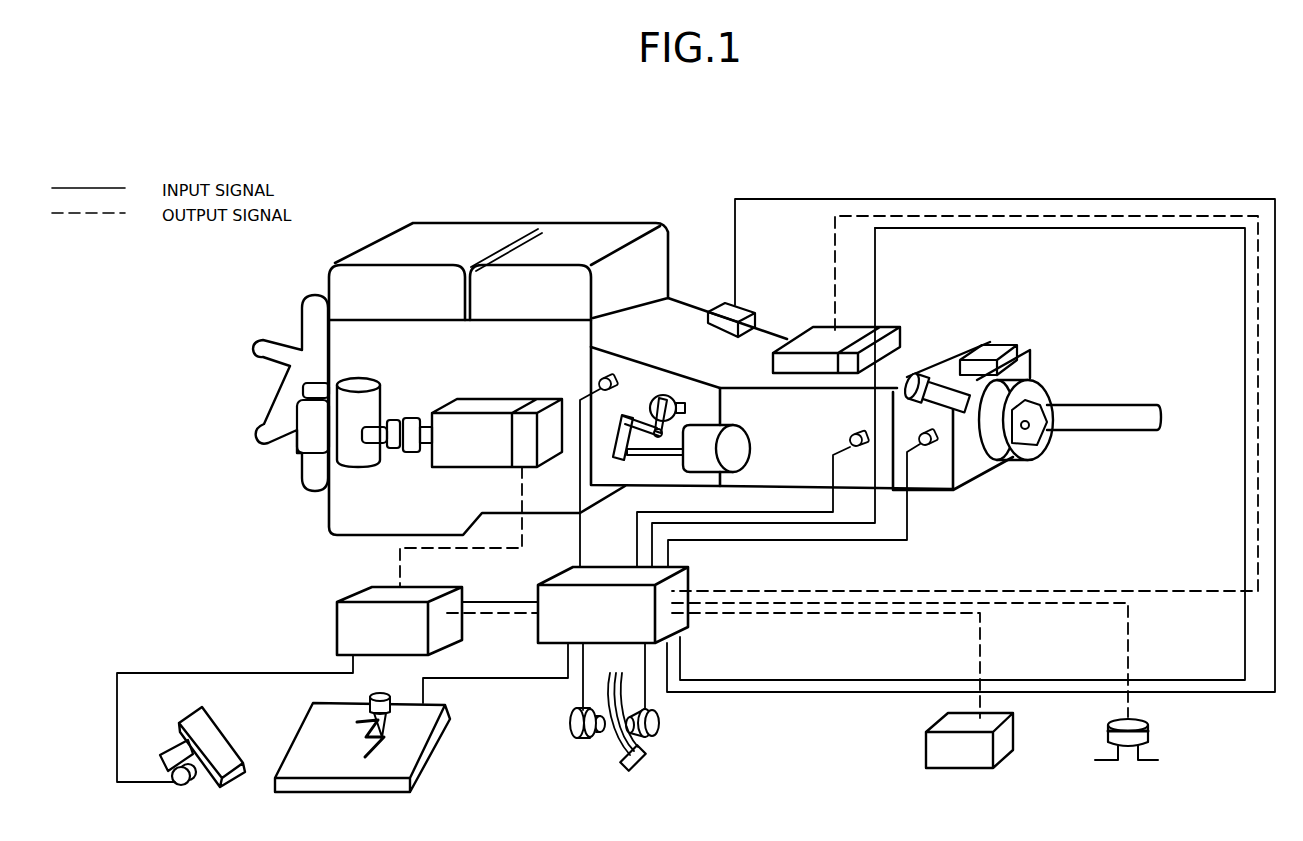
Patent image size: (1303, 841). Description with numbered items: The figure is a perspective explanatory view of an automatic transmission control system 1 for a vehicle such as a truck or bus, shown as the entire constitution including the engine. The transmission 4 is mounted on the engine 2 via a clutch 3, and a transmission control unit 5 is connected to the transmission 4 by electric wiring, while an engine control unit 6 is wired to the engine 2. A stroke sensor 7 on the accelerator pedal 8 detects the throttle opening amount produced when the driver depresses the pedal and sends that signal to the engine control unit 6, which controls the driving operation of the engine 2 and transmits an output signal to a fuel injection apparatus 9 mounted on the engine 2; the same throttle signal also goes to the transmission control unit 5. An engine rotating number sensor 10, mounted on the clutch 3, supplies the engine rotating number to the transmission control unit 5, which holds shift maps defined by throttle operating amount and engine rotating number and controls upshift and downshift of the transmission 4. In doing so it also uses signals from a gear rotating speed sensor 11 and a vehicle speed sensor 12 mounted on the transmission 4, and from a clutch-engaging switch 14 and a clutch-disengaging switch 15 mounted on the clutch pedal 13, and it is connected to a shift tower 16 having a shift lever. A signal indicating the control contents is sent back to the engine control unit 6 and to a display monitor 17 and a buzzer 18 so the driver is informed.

The automatic transmission control system 1 is at (1045, 188).
The engine 2 is at (412, 238).
The clutch 3 is at (687, 323).
The transmission 4 is at (762, 417).
The transmission control unit 5 is at (684, 581).
The engine control unit 6 is at (336, 613).
The stroke sensor 7 is at (195, 785).
The accelerator pedal 8 is at (192, 720).
The fuel injection apparatus 9 is at (538, 403).
The engine rotating number sensor 10 is at (598, 384).
The gear rotating speed sensor 11 is at (939, 446).
The vehicle speed sensor 12 is at (920, 374).
The clutch pedal 13 is at (643, 766).
The clutch-engaging switch 14 is at (662, 726).
The clutch-disengaging switch 15 is at (577, 742).
The shift tower 16 is at (428, 752).
The display monitor 17 is at (1007, 742).
The buzzer 18 is at (1149, 734).